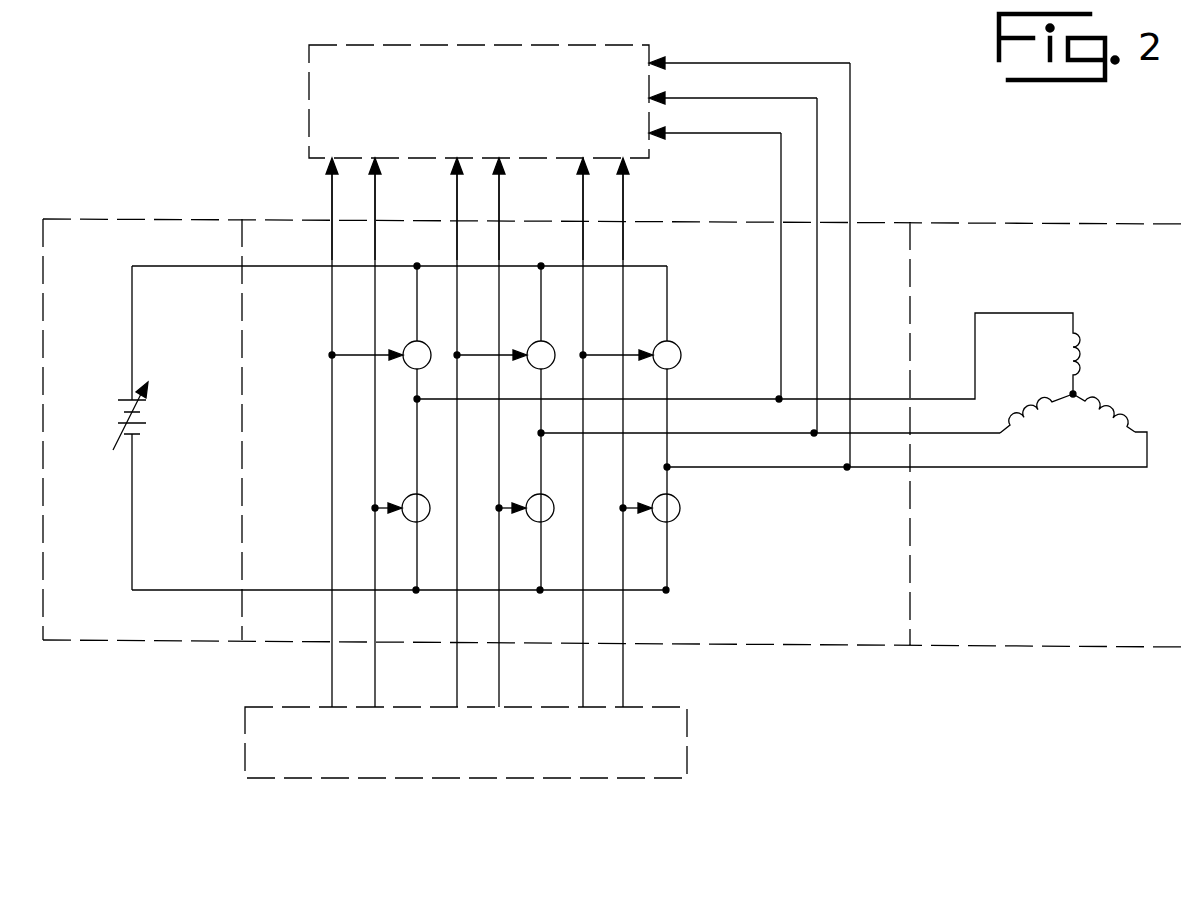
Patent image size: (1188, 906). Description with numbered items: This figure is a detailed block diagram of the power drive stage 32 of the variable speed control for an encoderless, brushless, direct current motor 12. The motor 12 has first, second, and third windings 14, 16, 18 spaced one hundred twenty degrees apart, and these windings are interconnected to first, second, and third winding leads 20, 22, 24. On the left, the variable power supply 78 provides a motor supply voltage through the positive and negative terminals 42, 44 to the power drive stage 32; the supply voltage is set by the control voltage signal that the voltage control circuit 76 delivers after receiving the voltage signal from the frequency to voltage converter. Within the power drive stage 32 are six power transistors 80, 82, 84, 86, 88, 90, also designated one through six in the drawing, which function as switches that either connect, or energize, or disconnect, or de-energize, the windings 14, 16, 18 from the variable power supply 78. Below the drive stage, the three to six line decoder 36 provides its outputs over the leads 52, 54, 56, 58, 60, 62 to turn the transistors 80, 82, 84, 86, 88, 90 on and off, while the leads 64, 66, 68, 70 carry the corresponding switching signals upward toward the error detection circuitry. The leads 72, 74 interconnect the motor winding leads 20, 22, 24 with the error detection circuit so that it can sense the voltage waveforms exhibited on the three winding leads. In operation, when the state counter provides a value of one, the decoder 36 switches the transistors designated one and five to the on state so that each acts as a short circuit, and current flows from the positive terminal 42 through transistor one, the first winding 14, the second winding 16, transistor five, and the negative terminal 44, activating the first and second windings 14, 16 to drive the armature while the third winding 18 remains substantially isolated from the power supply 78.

The direct current motor 12 is at (1084, 499).
The first winding 14 is at (1085, 352).
The second winding 16 is at (1049, 418).
The third winding 18 is at (1120, 405).
The first winding lead 20 is at (1013, 313).
The second winding lead 22 is at (940, 433).
The third winding lead 24 is at (1101, 467).
The power drive stage 32 is at (813, 645).
The three to six line decoder 36 is at (687, 748).
The positive terminal 42 is at (193, 266).
The negative terminal 44 is at (172, 588).
The lead 52 is at (332, 668).
The lead 54 is at (375, 665).
The lead 56 is at (457, 672).
The lead 58 is at (499, 668).
The lead 60 is at (583, 686).
The lead 62 is at (623, 673).
The lead 64 is at (332, 197).
The lead 66 is at (375, 197).
The lead 68 is at (457, 198).
The lead 70 is at (499, 193).
The lead 72 is at (583, 197).
The lead 74 is at (625, 193).
The voltage control circuit 76 is at (781, 165).
The variable power supply 78 is at (95, 641).
The power transistor 80 is at (409, 343).
The power transistor 82 is at (537, 341).
The power transistor 84 is at (661, 341).
The power transistor 86 is at (408, 495).
The power transistor 88 is at (592, 45).
The power transistor 90 is at (656, 495).